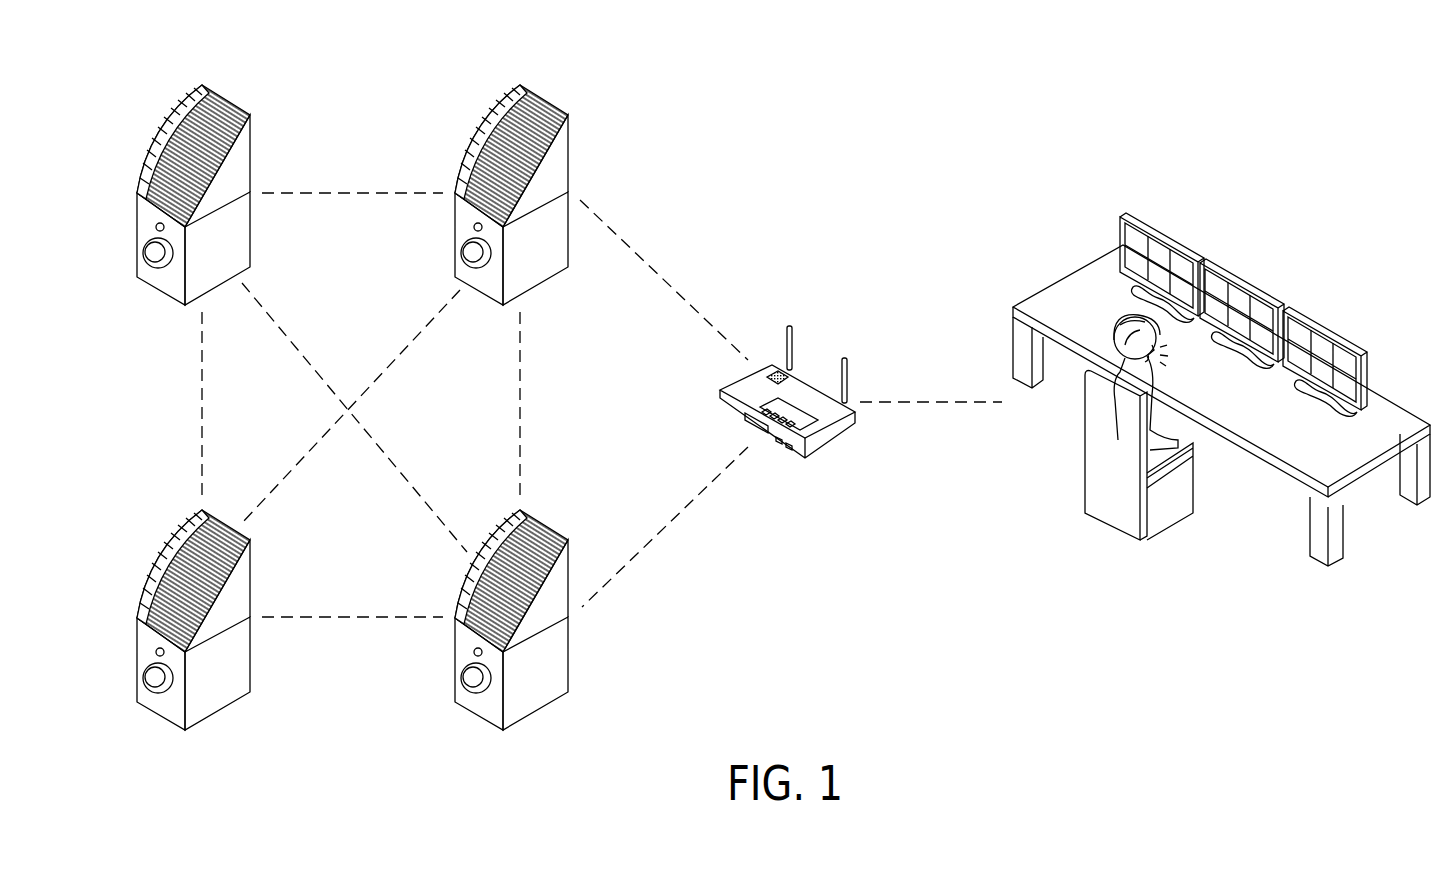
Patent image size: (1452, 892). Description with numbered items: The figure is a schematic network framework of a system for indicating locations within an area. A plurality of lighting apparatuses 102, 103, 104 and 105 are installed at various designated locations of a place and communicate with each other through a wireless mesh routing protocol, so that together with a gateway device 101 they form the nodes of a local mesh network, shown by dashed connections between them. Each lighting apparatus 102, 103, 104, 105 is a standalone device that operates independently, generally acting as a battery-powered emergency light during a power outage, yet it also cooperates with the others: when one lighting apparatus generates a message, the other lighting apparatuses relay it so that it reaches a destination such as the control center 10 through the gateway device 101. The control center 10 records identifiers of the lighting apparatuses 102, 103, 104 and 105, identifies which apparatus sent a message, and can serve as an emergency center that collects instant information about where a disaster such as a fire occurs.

The control center 10 is at (1252, 278).
The gateway device 101 is at (832, 443).
The lighting apparatus 102 is at (570, 137).
The lighting apparatus 103 is at (572, 560).
The lighting apparatus 104 is at (252, 137).
The lighting apparatus 105 is at (252, 578).